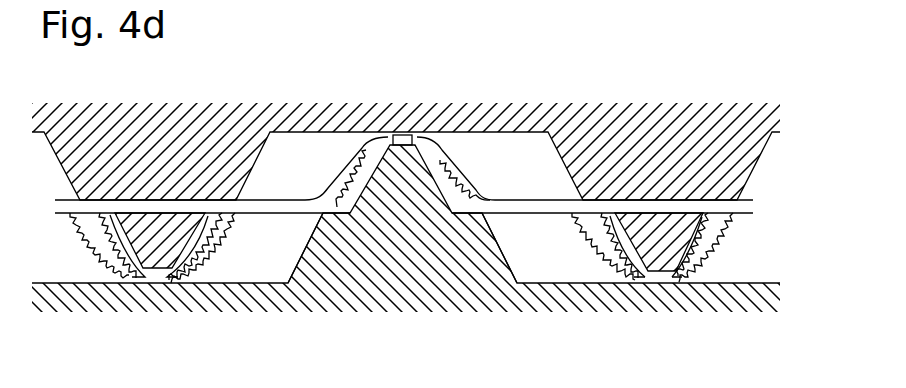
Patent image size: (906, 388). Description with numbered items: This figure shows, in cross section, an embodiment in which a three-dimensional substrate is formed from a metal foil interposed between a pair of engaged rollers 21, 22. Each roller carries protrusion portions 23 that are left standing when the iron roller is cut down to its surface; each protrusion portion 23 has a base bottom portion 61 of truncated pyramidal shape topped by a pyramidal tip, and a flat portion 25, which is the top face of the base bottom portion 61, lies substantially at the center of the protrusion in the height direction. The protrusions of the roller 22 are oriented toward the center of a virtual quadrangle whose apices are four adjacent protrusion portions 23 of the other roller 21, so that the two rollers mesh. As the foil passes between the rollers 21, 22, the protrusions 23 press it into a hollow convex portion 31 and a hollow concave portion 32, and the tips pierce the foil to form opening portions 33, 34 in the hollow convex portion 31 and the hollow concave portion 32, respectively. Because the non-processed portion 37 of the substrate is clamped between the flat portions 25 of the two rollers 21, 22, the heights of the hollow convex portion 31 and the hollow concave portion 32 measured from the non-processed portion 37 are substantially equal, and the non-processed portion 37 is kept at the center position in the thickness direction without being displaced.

The roller 21 is at (203, 118).
The roller 22 is at (401, 288).
The protrusion portion 23 is at (402, 135).
The flat portion 25 is at (230, 203).
The hollow convex portion 31 is at (437, 143).
The hollow concave portion 32 is at (625, 262).
The opening portion 33 is at (392, 137).
The opening portion 34 is at (157, 278).
The non-processed portion 37 is at (283, 211).
The base bottom portion 61 is at (302, 258).